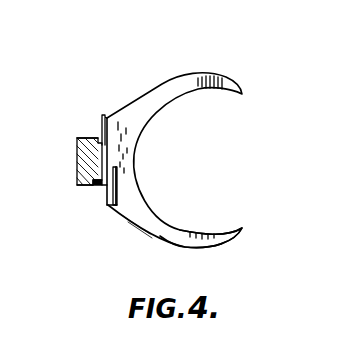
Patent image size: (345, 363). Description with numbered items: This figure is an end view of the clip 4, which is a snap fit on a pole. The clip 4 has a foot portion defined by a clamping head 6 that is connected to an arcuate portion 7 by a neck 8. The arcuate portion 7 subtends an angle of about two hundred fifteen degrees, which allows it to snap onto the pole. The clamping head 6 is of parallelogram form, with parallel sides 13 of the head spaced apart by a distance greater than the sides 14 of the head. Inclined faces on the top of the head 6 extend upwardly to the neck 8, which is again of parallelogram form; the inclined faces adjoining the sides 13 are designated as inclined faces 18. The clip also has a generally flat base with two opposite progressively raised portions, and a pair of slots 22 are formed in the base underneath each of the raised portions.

The clip 4 is at (142, 80).
The clamping head 6 is at (96, 178).
The arcuate portion 7 is at (178, 236).
The neck 8 is at (99, 187).
The parallel sides of the head 13 is at (78, 138).
The sides of the head 14 is at (83, 158).
The inclined faces 18 is at (102, 130).
The slots 22 is at (107, 207).